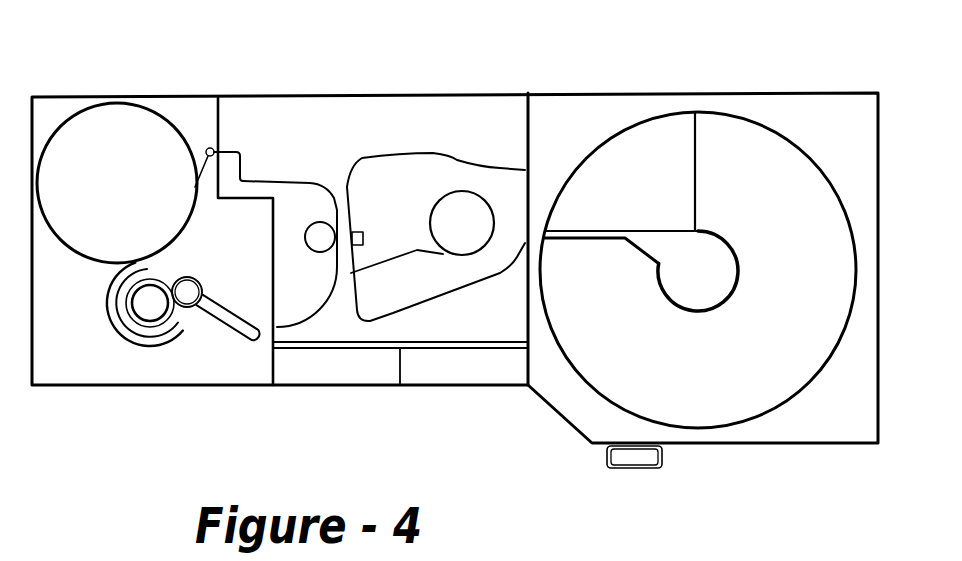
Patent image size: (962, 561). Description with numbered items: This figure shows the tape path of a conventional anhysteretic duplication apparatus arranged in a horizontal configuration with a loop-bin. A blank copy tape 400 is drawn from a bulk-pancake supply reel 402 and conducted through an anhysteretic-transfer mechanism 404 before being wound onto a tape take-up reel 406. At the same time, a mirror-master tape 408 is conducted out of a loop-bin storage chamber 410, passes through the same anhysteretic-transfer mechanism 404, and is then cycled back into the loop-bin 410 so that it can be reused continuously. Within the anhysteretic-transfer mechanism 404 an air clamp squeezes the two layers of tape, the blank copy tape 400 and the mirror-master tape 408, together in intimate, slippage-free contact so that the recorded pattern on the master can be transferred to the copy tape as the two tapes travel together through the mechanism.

The blank copy tape 400 is at (280, 180).
The bulk-pancake supply reel 402 is at (107, 120).
The anhysteretic-transfer mechanism 404 is at (338, 193).
The mirror-master tape 408 is at (400, 152).
The tape take-up reel 406 is at (138, 313).
The loop-bin storage chamber 410 is at (710, 132).